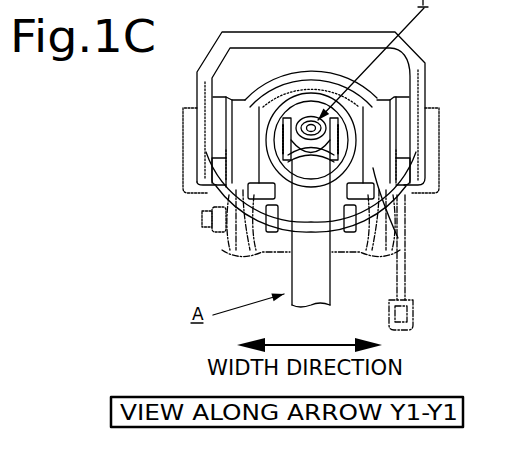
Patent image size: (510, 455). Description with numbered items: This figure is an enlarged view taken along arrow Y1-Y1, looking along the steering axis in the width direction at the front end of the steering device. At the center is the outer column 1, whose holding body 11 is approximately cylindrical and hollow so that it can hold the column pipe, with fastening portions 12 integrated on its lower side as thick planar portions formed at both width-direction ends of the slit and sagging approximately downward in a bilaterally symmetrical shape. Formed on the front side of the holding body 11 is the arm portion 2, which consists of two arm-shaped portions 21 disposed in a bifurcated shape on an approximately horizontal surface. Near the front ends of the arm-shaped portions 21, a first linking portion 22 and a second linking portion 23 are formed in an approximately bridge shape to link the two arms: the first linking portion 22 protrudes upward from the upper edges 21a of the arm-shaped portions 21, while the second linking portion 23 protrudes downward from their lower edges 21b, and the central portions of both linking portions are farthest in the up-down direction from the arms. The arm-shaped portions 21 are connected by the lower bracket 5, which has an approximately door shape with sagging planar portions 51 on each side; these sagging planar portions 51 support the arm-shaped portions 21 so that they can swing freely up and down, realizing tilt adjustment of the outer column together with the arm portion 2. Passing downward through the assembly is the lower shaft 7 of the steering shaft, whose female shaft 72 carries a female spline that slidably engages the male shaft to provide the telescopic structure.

The outer column 1 is at (333, 82).
The arm portion 2 is at (421, 66).
The lower bracket 5 is at (386, 84).
The lower shaft 7 is at (333, 283).
The holding body 11 is at (290, 84).
The fastening portion 12 is at (268, 232).
The arm-shaped portion 21 is at (216, 106).
The upper edge 21a is at (412, 90).
The lower edge 21b is at (405, 186).
The first linking portion 22 is at (258, 84).
The second linking portion 23 is at (380, 197).
The sagging planar portion 51 is at (200, 167).
The female shaft 72 is at (292, 278).